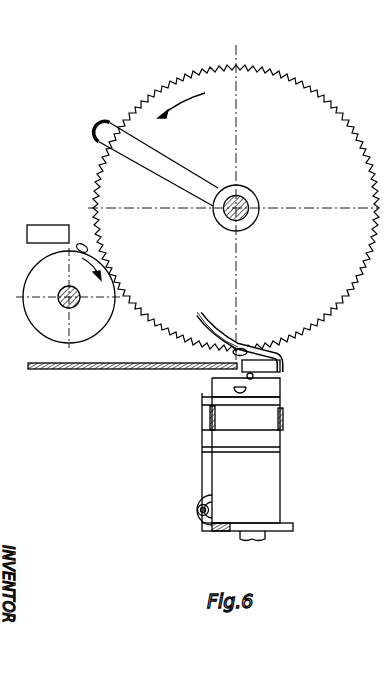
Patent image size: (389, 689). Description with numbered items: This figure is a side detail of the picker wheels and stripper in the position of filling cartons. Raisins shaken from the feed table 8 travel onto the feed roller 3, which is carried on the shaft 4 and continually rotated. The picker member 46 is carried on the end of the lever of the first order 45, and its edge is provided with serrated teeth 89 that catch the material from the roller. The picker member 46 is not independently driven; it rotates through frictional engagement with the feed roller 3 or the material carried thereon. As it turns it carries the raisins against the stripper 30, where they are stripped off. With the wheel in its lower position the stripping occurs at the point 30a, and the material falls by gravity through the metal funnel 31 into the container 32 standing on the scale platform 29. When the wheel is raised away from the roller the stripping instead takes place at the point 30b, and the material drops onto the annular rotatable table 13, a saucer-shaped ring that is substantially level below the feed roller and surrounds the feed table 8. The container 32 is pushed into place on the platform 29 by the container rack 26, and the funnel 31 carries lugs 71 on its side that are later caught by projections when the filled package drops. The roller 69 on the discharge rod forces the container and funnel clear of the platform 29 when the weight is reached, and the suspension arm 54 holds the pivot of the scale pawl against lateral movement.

The teeth 89 is at (198, 74).
The picker member 46 is at (104, 177).
The lever of the first order 45 is at (100, 138).
The feed table 8 is at (56, 233).
The feed roller 3 is at (33, 268).
The shaft 4 is at (58, 300).
The annular rotatable table 13 is at (146, 363).
The stripper 30 is at (283, 353).
The stripping point 30a is at (245, 349).
The stripping point 30b is at (236, 328).
The lugs 71 is at (234, 387).
The metal funnel 31 is at (283, 384).
The container 32 is at (275, 436).
The container rack 26 is at (217, 447).
The roller 69 is at (197, 510).
The suspension arm 54 is at (214, 527).
The scale platform 29 is at (268, 529).